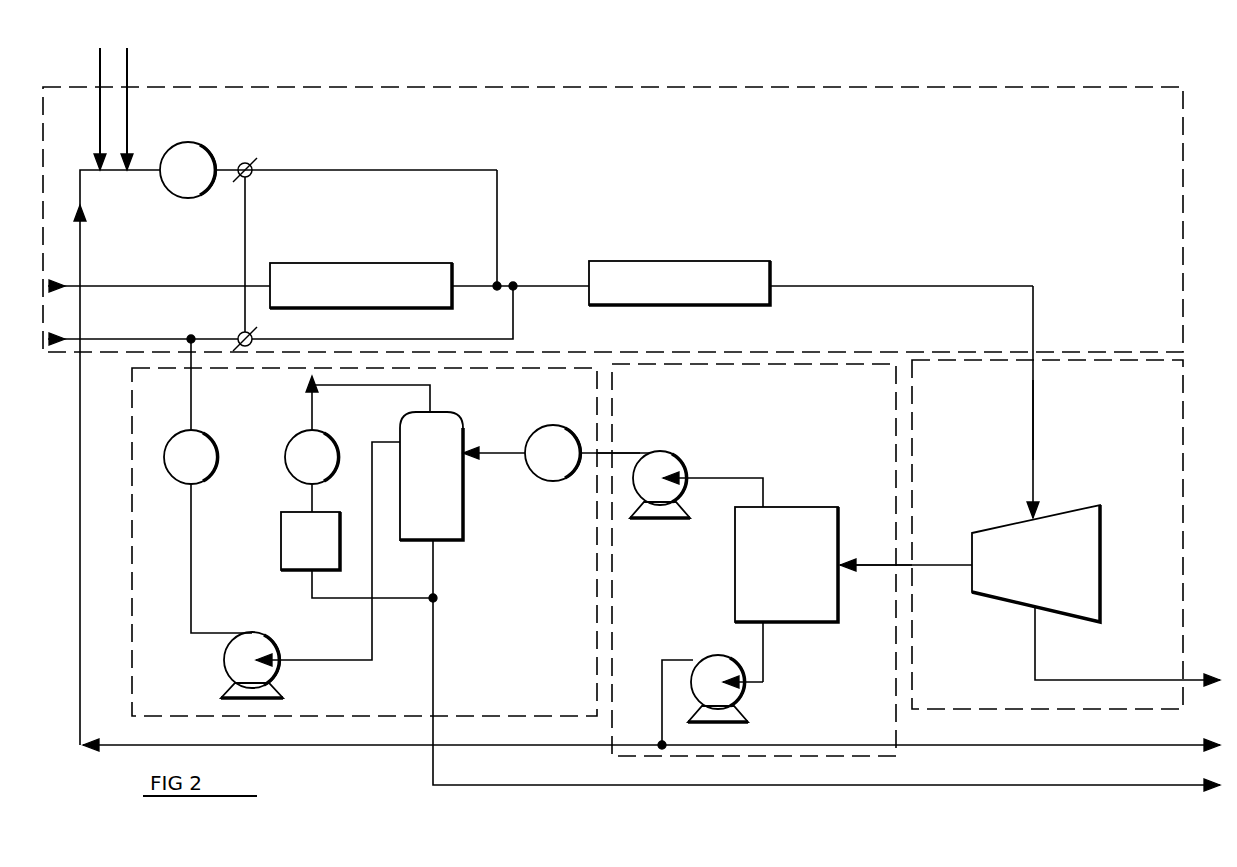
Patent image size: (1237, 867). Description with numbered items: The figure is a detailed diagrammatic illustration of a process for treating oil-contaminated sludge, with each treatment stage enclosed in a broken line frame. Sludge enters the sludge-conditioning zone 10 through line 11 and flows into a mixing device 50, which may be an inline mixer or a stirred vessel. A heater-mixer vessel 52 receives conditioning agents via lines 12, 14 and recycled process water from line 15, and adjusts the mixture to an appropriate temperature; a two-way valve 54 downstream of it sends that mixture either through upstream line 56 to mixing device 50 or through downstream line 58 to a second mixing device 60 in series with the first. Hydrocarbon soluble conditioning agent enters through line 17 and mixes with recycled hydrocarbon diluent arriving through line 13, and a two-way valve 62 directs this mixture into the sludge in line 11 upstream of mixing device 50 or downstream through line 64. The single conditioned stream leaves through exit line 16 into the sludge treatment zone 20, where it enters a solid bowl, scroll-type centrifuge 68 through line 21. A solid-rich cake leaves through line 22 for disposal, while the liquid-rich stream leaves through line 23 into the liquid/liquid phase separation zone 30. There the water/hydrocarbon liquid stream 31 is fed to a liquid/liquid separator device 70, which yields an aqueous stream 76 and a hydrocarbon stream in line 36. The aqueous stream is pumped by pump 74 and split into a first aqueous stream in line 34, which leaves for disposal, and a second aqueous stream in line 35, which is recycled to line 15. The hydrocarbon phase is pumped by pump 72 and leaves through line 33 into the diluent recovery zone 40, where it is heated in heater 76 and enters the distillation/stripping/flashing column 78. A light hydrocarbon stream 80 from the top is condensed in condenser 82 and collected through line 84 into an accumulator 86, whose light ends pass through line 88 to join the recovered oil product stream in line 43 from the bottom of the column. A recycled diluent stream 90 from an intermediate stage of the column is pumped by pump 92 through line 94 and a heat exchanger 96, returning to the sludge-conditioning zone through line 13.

The sludge-conditioning zone 10 is at (263, 85).
The line 11 is at (151, 285).
The line 12 is at (98, 80).
The line 13 is at (194, 352).
The line 14 is at (129, 80).
The line 15 is at (78, 178).
The exit line 16 is at (1036, 348).
The line 17 is at (70, 347).
The sludge treatment zone 20 is at (1185, 442).
The line 21 is at (1036, 432).
The line 22 is at (1125, 680).
The line 23 is at (928, 562).
The liquid/liquid phase separation zone 30 is at (893, 757).
The water/hydrocarbon liquid stream 31 is at (840, 560).
The line 33 is at (618, 452).
The line 34 is at (836, 744).
The line 35 is at (80, 538).
The line 36 is at (735, 478).
The diluent recovery zone 40 is at (130, 512).
The line 43 is at (436, 588).
The mixing device 50 is at (415, 262).
The heater-mixer vessel 52 is at (188, 146).
The two-way valve 54 is at (241, 162).
The upstream line 56 is at (247, 236).
The downstream line 58 is at (458, 168).
The second mixing device 60 is at (729, 262).
The two-way valve 62 is at (240, 330).
The line 64 is at (516, 312).
The centrifuge 68 is at (1104, 556).
The liquid/liquid separator device 70 is at (806, 508).
The pump 72 is at (676, 454).
The pump 74 is at (722, 656).
The aqueous stream / heater 76 is at (550, 426).
The distillation/stripping/flashing column 78 is at (466, 496).
The light hydrocarbon stream 80 is at (308, 390).
The condenser 82 is at (296, 438).
The line 84 is at (308, 502).
The accumulator 86 is at (280, 548).
The line 88 is at (310, 596).
The recycled diluent stream 90 is at (374, 652).
The pump 92 is at (226, 658).
The line 94 is at (188, 578).
The heat exchanger 96 is at (174, 438).